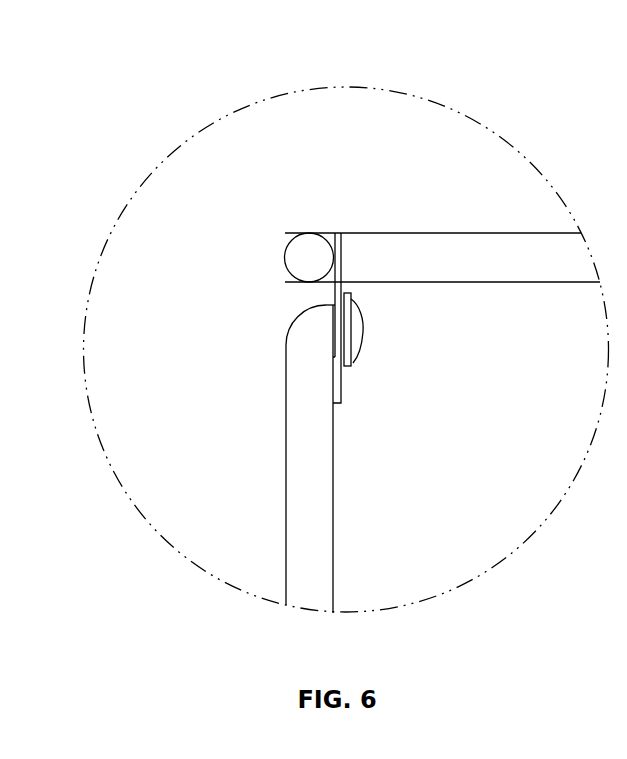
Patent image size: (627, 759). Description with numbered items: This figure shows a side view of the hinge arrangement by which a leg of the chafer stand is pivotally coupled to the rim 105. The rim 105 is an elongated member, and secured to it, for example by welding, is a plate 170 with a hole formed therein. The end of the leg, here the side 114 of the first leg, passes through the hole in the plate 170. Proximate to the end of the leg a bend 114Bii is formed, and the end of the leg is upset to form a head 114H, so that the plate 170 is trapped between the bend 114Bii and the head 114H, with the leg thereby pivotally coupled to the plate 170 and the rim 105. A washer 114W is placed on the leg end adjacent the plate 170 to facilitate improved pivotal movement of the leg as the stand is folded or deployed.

The rim 105 is at (430, 230).
The plate 170 is at (348, 253).
The side 114 is at (312, 522).
The bend 114Bii is at (298, 321).
The washer 114W is at (347, 372).
The head 114H is at (362, 347).